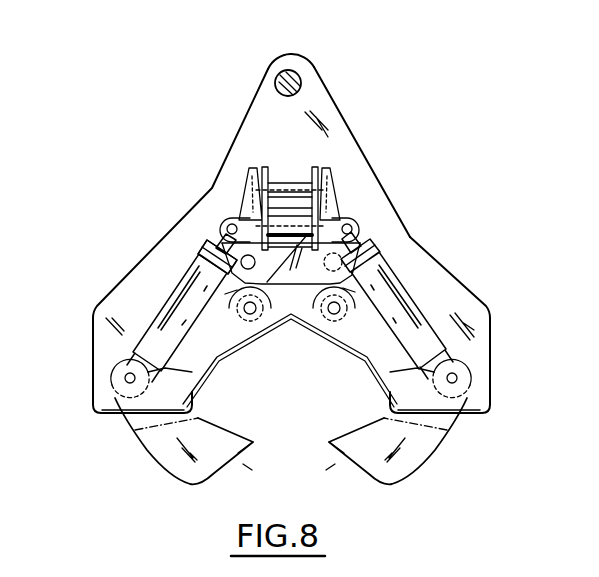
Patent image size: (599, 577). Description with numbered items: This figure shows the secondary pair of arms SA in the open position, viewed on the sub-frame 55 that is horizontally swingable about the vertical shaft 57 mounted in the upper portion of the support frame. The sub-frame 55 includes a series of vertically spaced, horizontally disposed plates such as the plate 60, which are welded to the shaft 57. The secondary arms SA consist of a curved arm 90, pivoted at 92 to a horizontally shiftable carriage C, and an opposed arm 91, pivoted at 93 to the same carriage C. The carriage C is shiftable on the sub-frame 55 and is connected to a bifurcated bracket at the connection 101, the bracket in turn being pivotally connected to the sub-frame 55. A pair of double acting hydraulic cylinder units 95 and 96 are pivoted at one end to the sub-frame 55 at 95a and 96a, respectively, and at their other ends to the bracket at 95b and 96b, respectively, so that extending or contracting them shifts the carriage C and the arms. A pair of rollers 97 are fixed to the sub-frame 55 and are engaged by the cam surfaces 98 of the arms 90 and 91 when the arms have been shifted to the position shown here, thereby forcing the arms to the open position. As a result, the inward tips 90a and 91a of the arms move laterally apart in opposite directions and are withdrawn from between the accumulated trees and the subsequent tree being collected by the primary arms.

The sub-frame 55 is at (360, 141).
The vertical shaft 57 is at (295, 74).
The plate 60 is at (341, 108).
The connection of carriage to bifurcated bracket 101 is at (279, 184).
The carriage C is at (337, 191).
The pivot of curved arm 92 is at (360, 237).
The pivot of opposed arm 93 is at (196, 271).
The double acting hydraulic cylinder unit 95 is at (170, 297).
The double acting hydraulic cylinder unit 96 is at (407, 290).
The cylinder unit pivot on sub-frame 95a is at (124, 378).
The cylinder unit pivot on sub-frame 96a is at (458, 378).
The cylinder unit pivot on bracket 95b is at (228, 224).
The cylinder unit pivot on bracket 96b is at (357, 221).
The roller 97 is at (248, 326).
The cam surface 98 is at (301, 320).
The curved arm 90 is at (213, 468).
The opposed arm 91 is at (412, 470).
The inward tip of curved arm 90a is at (257, 444).
The inward tip of opposed arm 91a is at (332, 442).
The secondary arms SA is at (340, 460).